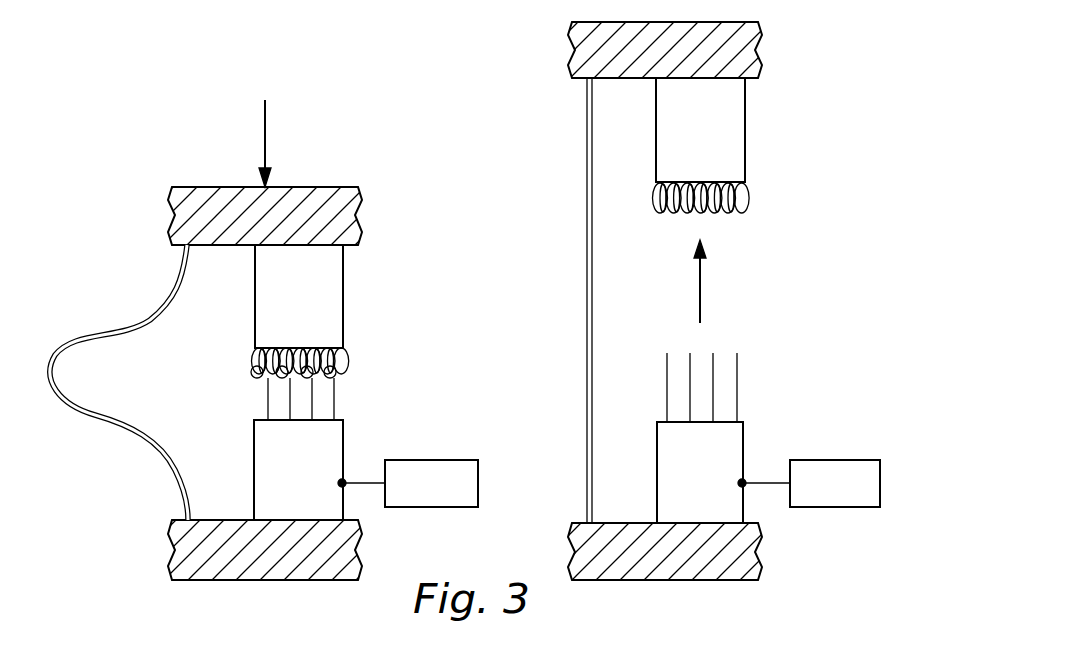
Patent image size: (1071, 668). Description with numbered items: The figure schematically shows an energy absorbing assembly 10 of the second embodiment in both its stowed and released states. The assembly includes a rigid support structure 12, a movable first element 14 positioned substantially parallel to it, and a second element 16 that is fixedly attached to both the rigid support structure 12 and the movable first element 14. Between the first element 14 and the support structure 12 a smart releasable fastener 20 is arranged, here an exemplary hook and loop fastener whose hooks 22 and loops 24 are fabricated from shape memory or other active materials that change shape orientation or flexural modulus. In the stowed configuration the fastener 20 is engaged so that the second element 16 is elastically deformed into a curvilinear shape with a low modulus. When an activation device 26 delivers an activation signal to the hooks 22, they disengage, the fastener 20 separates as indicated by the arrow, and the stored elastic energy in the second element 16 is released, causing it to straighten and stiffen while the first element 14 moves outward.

The energy absorbing assembly 10 is at (156, 118).
The rigid support structure 12 is at (190, 561).
The movable first element 14 is at (193, 225).
The second element 16 is at (157, 455).
The smart releasable fastener 20 is at (362, 263).
The hooks 22 is at (268, 396).
The loops 24 is at (258, 370).
The activation device 26 is at (427, 460).